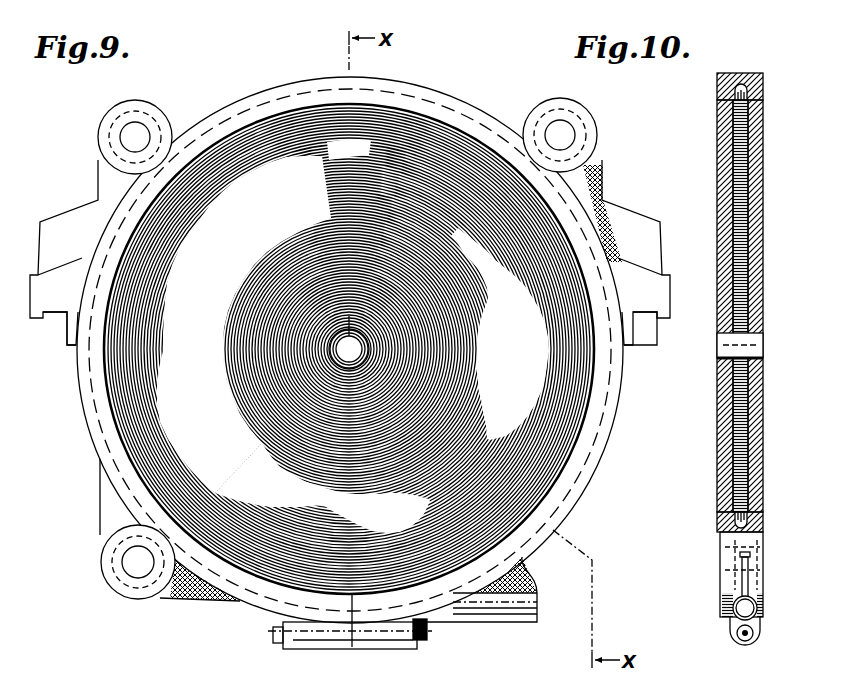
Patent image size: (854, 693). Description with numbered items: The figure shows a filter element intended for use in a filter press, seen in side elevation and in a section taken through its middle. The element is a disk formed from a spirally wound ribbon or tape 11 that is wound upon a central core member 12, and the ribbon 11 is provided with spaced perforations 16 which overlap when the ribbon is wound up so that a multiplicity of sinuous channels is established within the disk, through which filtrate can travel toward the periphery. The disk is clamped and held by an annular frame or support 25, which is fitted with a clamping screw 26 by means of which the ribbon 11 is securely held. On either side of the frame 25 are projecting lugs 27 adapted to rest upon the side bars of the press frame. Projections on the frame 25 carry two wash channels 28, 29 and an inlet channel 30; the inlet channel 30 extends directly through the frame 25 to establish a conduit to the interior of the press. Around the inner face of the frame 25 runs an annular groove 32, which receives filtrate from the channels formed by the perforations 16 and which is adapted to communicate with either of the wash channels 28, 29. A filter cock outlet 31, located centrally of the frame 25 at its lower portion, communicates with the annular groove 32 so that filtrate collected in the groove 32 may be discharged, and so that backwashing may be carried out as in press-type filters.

In FIG. 9, the spirally wound ribbon or tape 11 is at (544, 225).
In FIG. 10, the spirally wound ribbon or tape 11 is at (718, 163).
In FIG. 9, the core member 12 is at (360, 346).
In FIG. 10, the core member 12 is at (728, 345).
In FIG. 10, the spaced perforations 16 is at (745, 220).
In FIG. 9, the frame or support 25 is at (422, 90).
In FIG. 10, the frame or support 25 is at (718, 80).
In FIG. 9, the clamping screw 26 is at (273, 634).
In FIG. 10, the clamping screw 26 is at (735, 640).
In FIG. 9, the projecting lugs 27 is at (57, 310).
In FIG. 9, the wash channel 28 is at (122, 135).
In FIG. 9, the wash channel 29 is at (567, 128).
In FIG. 9, the inlet channel 30 is at (135, 574).
In FIG. 9, the filter cock outlet 31 is at (537, 610).
In FIG. 10, the filter cock outlet 31 is at (730, 617).
In FIG. 9, the annular groove 32 is at (587, 454).
In FIG. 10, the annular groove 32 is at (737, 97).